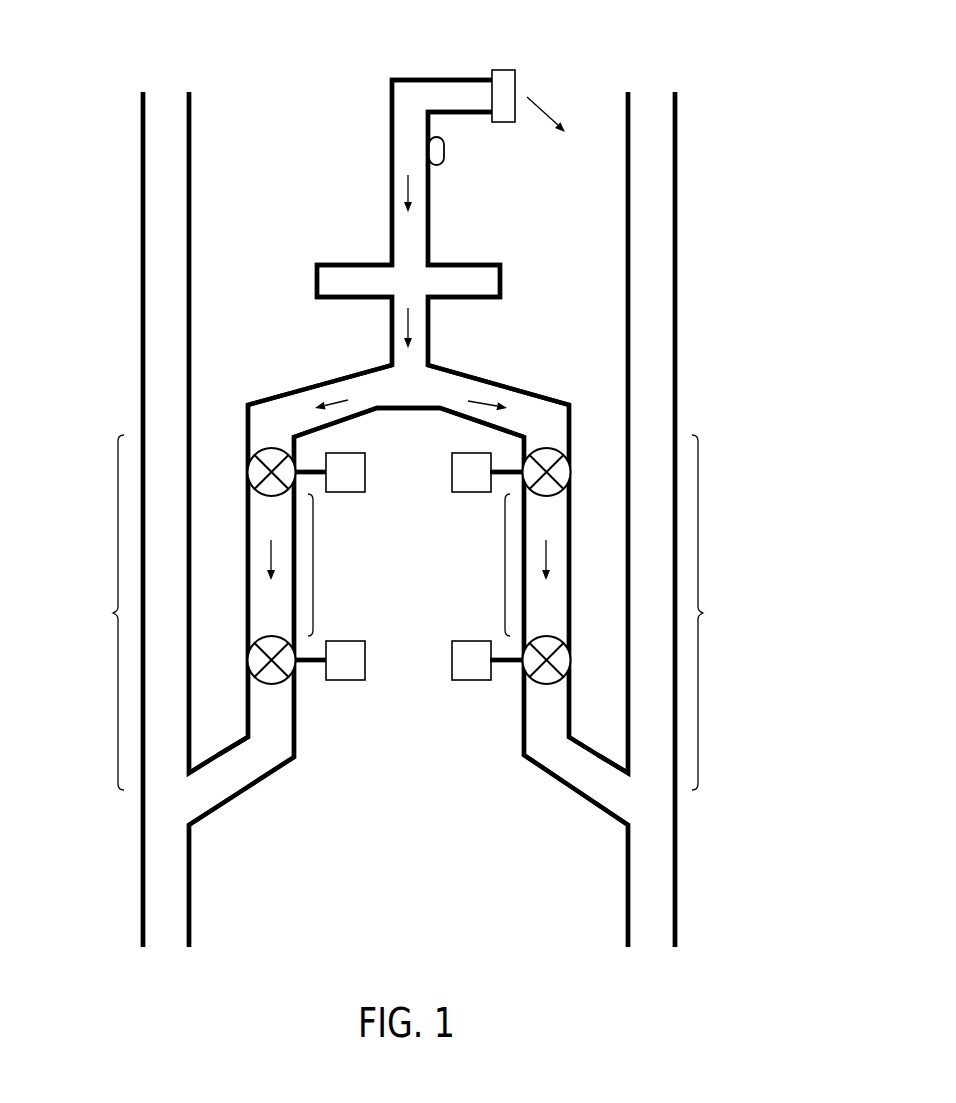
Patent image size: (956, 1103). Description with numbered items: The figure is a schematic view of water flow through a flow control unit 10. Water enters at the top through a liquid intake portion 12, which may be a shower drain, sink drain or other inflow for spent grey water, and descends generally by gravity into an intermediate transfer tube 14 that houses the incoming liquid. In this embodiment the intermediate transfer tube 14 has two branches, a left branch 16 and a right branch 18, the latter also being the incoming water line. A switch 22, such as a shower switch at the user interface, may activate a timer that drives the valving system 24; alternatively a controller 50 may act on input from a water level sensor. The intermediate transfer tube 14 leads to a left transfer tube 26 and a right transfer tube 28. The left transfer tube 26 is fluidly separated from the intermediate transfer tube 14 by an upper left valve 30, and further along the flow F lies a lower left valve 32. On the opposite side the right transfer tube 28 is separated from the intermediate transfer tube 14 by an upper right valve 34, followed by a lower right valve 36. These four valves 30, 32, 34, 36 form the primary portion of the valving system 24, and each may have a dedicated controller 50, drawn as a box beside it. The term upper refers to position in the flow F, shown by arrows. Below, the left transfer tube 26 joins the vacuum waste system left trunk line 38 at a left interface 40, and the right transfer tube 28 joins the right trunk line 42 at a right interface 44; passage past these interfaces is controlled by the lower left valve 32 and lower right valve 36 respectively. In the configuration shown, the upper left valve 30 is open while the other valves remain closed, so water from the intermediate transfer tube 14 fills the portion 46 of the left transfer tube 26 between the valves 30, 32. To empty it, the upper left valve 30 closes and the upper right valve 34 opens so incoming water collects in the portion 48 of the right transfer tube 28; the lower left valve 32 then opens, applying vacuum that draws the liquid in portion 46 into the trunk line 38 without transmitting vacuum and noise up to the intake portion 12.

The flow control unit 10 is at (730, 148).
The liquid intake portion 12 is at (436, 78).
The intermediate transfer tube 14 is at (412, 410).
The left branch 16 is at (320, 388).
The right branch 18 is at (405, 145).
The switch 22 is at (440, 151).
The valving system 24 is at (410, 612).
The left transfer tube 26 is at (243, 565).
The right transfer tube 28 is at (575, 565).
The upper left valve 30 is at (252, 468).
The lower left valve 32 is at (270, 678).
The upper right valve 34 is at (566, 468).
The lower right valve 36 is at (547, 678).
The vacuum waste system left trunk line 38 is at (162, 913).
The left interface 40 is at (193, 823).
The vacuum waste system right trunk line 42 is at (656, 913).
The right interface 44 is at (625, 823).
The portion of the left transfer tube 46 is at (330, 565).
The portion of the right transfer tube 48 is at (488, 565).
The controller 50 is at (357, 485).
The flow F is at (400, 188).